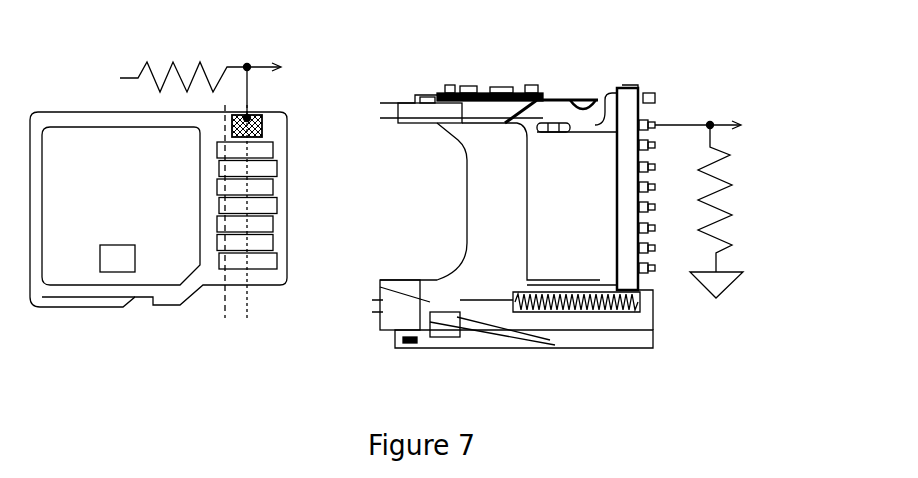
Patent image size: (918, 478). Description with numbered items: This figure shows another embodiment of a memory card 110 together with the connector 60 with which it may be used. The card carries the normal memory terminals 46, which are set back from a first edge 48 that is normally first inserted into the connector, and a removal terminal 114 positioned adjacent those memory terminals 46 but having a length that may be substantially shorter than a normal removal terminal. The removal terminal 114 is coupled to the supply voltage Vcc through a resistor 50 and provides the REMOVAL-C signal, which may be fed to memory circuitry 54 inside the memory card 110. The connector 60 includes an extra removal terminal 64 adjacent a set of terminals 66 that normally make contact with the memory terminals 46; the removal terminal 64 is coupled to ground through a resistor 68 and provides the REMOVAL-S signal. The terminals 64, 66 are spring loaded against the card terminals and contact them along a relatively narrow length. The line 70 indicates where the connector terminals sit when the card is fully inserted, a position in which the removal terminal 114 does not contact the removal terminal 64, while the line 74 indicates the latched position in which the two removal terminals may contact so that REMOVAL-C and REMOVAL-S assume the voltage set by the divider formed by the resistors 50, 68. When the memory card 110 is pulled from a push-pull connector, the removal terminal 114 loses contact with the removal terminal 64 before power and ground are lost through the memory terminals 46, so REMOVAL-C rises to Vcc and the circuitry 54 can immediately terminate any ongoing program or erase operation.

The first edge 48 is at (287, 128).
The memory card 110 is at (130, 215).
The memory circuitry 54 is at (128, 269).
The memory terminals 46 is at (290, 140).
The removal terminal 114 is at (258, 115).
The line 70 is at (225, 297).
The line 74 is at (247, 295).
The resistor 50 is at (177, 66).
The connector 60 is at (584, 215).
The removal terminal 64 is at (657, 121).
The terminals 66 is at (657, 139).
The resistor 68 is at (733, 222).